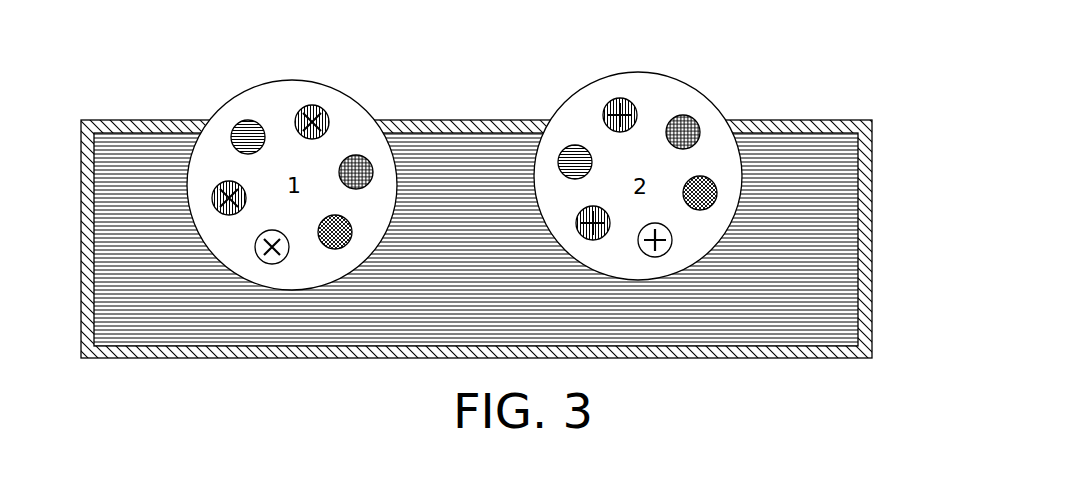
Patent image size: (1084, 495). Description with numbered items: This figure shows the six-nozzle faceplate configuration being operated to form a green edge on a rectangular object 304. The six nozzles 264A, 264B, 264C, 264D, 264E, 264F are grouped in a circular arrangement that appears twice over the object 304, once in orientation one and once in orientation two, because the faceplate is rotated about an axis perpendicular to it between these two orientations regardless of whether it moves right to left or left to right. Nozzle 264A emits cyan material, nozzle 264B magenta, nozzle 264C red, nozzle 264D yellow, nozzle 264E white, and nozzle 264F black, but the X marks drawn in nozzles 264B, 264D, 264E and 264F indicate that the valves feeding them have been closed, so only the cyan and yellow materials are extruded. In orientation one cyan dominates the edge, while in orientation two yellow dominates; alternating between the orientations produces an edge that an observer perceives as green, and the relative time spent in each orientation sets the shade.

The rectangular object 304 is at (840, 116).
The nozzle 264A is at (247, 120).
The nozzle 264B is at (313, 105).
The nozzle 264C is at (357, 155).
The nozzle 264D is at (212, 197).
The nozzle 264E is at (258, 255).
The nozzle 264F is at (350, 243).